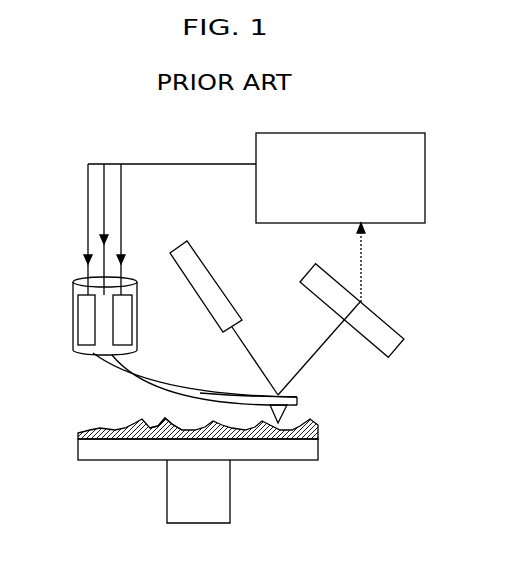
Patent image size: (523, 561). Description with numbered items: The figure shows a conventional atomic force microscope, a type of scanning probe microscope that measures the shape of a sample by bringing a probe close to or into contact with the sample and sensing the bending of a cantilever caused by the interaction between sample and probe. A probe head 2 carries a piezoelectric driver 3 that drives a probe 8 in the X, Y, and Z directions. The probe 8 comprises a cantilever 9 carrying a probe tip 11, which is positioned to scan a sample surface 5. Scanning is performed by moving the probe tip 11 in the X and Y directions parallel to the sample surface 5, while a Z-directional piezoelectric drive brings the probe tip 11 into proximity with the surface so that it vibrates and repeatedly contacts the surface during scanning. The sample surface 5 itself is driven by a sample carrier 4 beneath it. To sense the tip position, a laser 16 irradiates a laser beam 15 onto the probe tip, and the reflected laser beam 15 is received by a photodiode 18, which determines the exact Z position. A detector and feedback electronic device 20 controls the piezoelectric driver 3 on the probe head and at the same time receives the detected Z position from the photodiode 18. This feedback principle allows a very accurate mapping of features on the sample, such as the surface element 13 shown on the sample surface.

The probe head 2 is at (73, 290).
The piezoelectric driver 3 is at (86, 318).
The sample carrier 4 is at (78, 453).
The sample surface 5 is at (78, 433).
The probe 8 is at (117, 375).
The cantilever 9 is at (188, 388).
The probe tip 11 is at (298, 417).
The surface element 13 is at (164, 422).
The laser beam 15 is at (253, 345).
The laser 16 is at (203, 260).
The photodiode 18 is at (397, 332).
The detector and feedback electronic device 20 is at (336, 186).